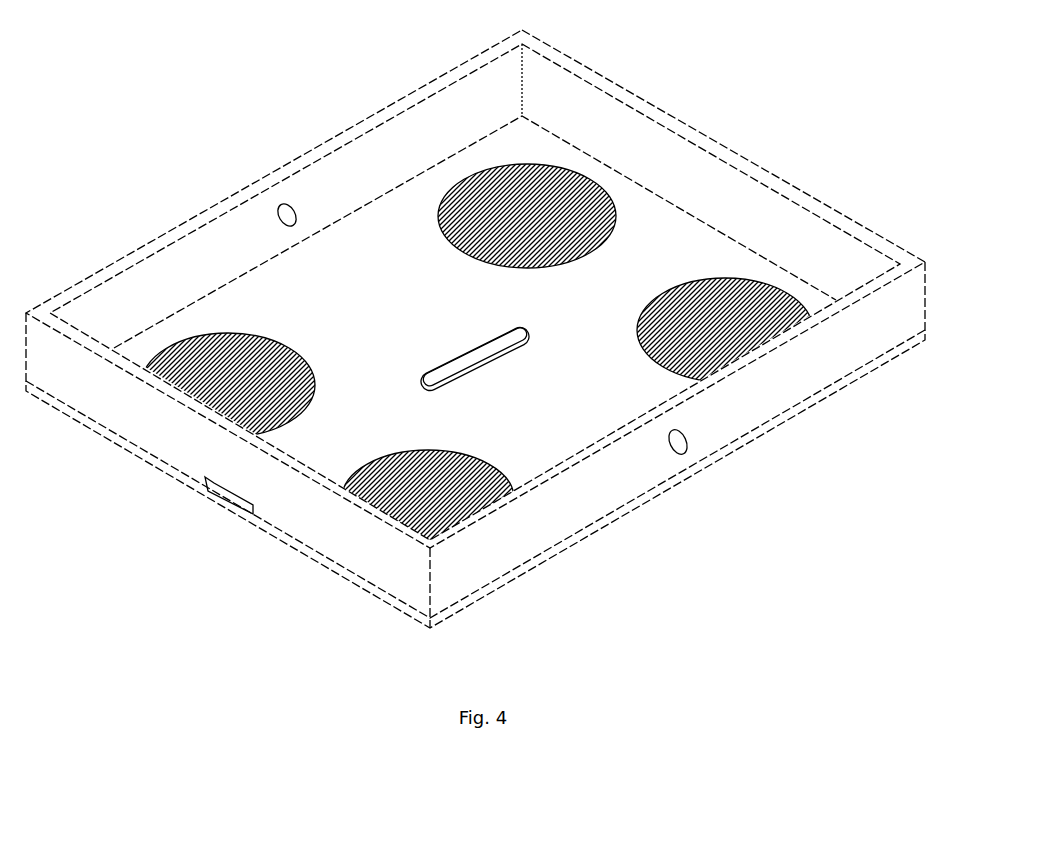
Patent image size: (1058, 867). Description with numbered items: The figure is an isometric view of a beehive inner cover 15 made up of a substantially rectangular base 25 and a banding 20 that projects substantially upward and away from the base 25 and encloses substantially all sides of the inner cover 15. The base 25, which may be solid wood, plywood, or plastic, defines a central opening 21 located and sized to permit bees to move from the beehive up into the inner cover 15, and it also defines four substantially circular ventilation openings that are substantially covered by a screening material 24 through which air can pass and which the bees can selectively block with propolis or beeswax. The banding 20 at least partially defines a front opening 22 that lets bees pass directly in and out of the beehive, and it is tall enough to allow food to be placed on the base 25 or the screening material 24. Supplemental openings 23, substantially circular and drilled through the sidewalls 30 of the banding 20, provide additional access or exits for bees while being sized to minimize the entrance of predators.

The inner cover 15 is at (475, 329).
The banding 20 is at (690, 127).
The central opening 21 is at (485, 370).
The front opening 22 is at (222, 498).
The supplemental openings 23 is at (288, 204).
The screening material 24 is at (745, 278).
The base 25 is at (287, 297).
The sidewalls 30 is at (815, 375).